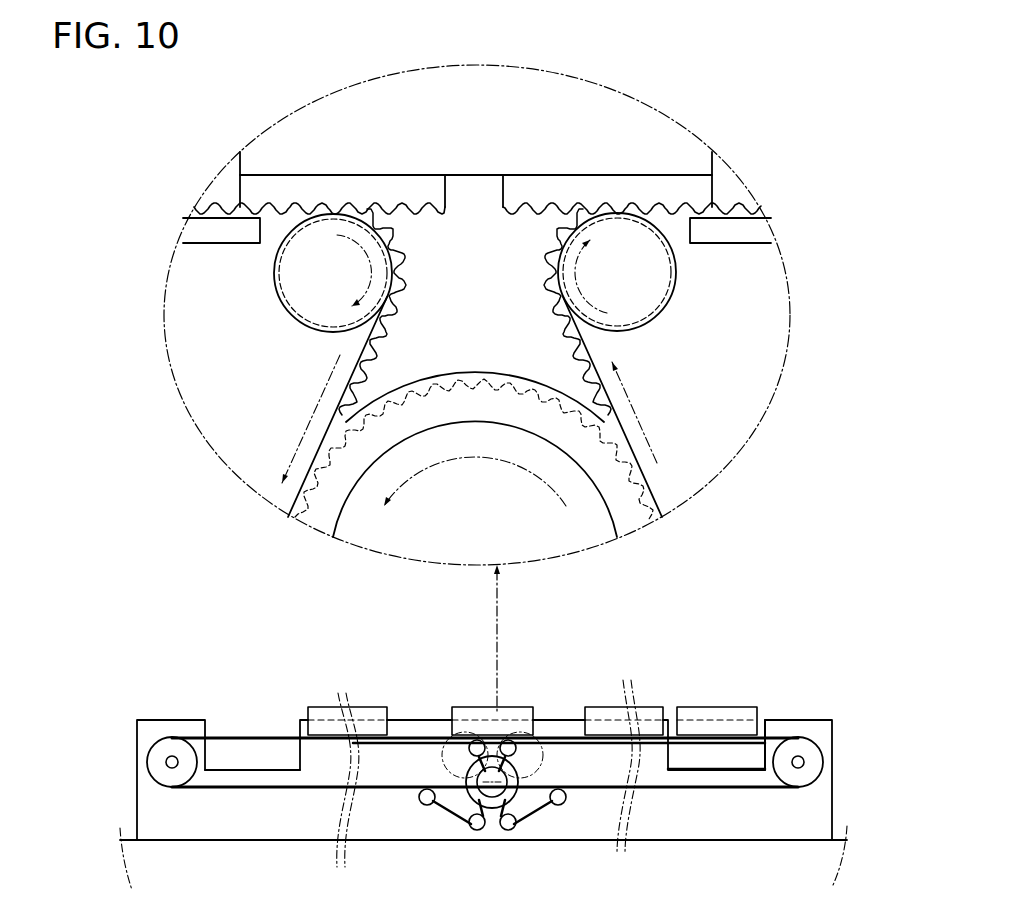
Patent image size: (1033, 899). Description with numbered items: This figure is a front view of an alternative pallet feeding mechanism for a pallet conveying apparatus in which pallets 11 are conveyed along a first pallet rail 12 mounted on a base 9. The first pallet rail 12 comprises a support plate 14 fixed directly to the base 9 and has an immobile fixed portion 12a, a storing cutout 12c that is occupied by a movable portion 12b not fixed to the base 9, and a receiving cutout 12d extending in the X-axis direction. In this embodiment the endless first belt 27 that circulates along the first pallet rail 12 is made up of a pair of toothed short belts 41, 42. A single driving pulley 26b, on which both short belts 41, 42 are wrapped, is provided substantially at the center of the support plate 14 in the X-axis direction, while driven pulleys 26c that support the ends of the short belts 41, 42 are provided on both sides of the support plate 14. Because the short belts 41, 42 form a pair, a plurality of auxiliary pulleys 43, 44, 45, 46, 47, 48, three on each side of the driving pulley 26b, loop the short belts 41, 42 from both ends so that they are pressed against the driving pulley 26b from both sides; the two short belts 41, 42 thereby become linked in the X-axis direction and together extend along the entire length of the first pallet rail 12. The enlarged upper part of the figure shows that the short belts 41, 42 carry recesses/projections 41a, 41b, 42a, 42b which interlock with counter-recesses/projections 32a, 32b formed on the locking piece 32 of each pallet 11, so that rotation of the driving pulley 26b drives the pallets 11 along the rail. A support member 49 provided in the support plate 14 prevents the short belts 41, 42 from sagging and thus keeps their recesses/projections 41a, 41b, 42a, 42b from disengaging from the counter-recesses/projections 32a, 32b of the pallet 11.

The base 9 is at (168, 830).
The pallet 11 is at (712, 162).
The first pallet rail 12 is at (329, 843).
The fixed portion 12a is at (377, 827).
The first movable portion 12b is at (680, 757).
The storing cutout 12c is at (738, 768).
The receiving cutout 12d is at (258, 766).
The support plate 14 is at (793, 807).
The driving pulley 26b is at (475, 372).
The driven pulley 26c is at (163, 743).
The first belt 27 is at (591, 795).
The locking piece 32 is at (238, 190).
The counter-recess/projection 32a is at (407, 208).
The counter-recess/projection 32b is at (398, 207).
The short belt 41 is at (363, 347).
The recess/projection 41a is at (393, 316).
The recess/projection 41b is at (387, 334).
The short belt 42 is at (590, 355).
The recess/projection 42a is at (565, 318).
The recess/projection 42b is at (565, 334).
The auxiliary pulley 43 is at (668, 303).
The auxiliary pulley 44 is at (511, 831).
The auxiliary pulley 45 is at (560, 805).
The auxiliary pulley 46 is at (297, 307).
The auxiliary pulley 47 is at (478, 830).
The auxiliary pulley 48 is at (430, 805).
The support member 49 is at (188, 247).